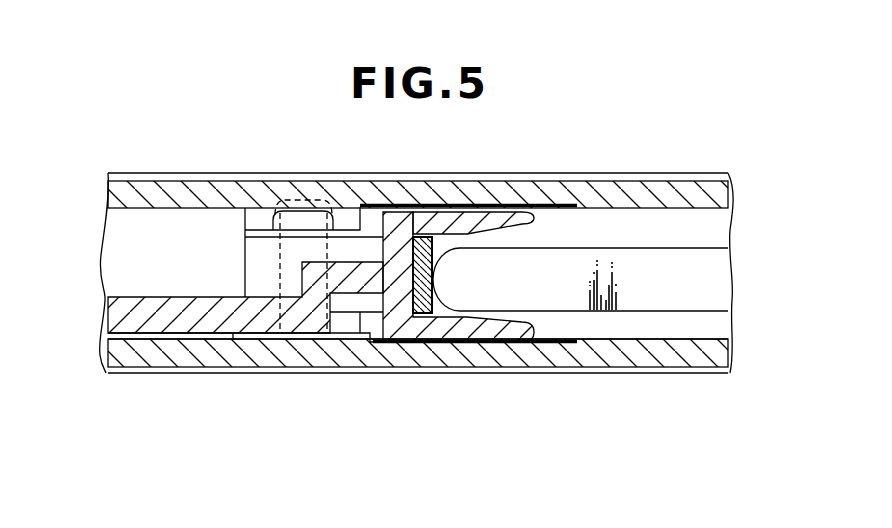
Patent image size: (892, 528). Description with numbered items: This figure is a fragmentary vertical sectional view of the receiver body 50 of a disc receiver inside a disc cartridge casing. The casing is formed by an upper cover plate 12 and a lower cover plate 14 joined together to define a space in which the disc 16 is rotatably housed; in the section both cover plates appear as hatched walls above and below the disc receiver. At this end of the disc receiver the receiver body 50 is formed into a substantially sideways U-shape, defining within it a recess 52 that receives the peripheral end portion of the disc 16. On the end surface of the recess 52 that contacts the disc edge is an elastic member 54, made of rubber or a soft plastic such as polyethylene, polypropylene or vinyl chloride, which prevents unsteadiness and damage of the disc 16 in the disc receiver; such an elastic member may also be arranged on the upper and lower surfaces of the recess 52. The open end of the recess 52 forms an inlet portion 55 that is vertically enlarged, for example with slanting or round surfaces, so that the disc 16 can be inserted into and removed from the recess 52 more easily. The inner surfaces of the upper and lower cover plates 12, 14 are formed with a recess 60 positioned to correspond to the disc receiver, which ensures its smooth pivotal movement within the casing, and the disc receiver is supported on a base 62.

The upper cover plate 12 is at (252, 192).
The lower cover plate 14 is at (210, 366).
The disc 16 is at (677, 247).
The receiver body 50 is at (406, 218).
The recess 52 is at (503, 263).
The elastic member 54 is at (422, 247).
The inlet portion 55 is at (527, 227).
The recess 60 is at (553, 210).
The base 62 is at (260, 336).